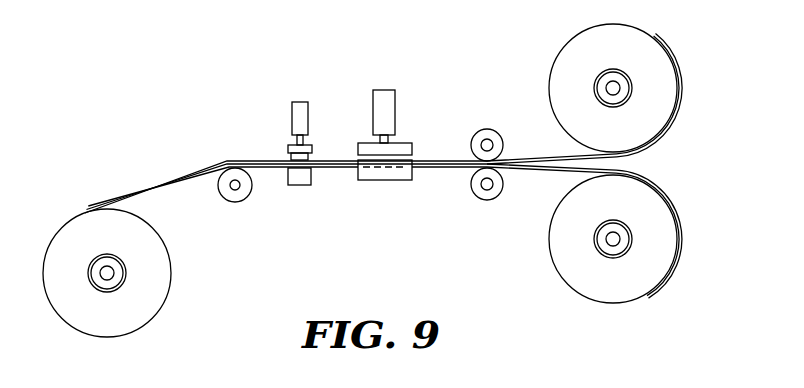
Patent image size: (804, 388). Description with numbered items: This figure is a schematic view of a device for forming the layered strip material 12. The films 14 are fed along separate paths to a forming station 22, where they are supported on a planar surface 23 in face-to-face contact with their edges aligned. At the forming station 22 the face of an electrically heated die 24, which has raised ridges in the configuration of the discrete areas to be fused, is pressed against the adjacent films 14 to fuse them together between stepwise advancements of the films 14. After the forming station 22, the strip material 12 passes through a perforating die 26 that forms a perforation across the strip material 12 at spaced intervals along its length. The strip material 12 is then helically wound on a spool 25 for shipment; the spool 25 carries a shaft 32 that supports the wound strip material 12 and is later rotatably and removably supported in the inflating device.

The layered strip material 12 is at (178, 177).
The spool 25 is at (110, 291).
The shaft 32 is at (100, 274).
The perforating die 26 is at (300, 100).
The forming station 22 is at (402, 125).
The electrically heated die 24 is at (412, 143).
The planar surface 23 is at (379, 169).
The films 14 is at (536, 157).